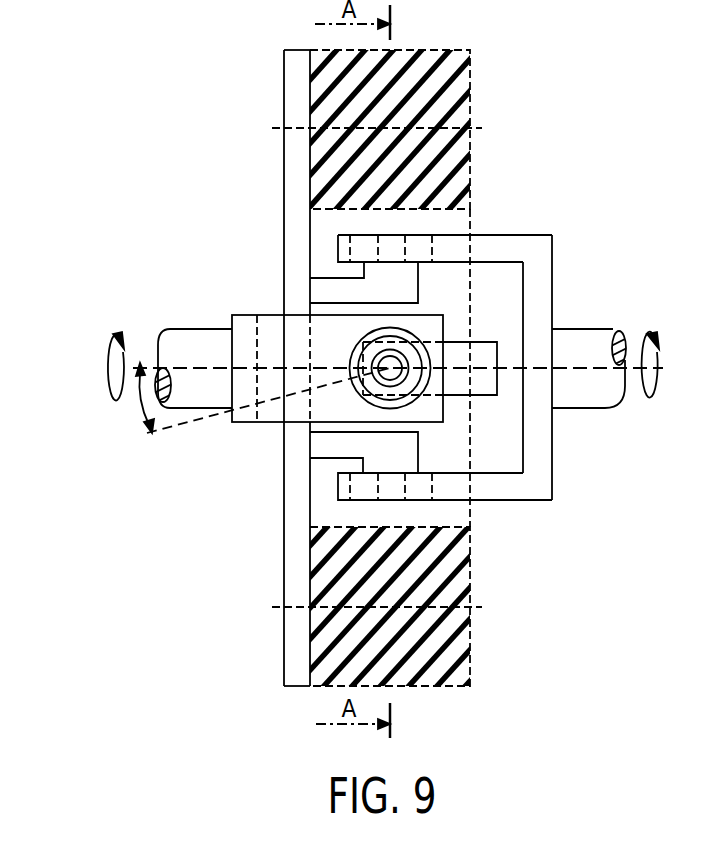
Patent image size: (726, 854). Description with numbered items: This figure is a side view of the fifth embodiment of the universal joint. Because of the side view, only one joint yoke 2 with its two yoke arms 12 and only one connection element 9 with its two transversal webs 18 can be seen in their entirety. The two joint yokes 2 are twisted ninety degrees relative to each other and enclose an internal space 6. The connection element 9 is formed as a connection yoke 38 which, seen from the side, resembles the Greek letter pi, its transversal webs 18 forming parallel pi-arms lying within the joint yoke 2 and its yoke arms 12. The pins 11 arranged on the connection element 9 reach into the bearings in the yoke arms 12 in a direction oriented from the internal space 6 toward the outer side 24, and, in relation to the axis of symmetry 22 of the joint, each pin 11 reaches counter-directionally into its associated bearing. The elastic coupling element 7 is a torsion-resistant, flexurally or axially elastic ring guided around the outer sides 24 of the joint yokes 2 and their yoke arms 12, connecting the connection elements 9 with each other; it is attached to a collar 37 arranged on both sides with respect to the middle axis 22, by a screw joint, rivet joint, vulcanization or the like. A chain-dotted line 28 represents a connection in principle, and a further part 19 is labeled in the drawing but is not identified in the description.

The joint yoke 2 is at (543, 445).
The internal space 6 is at (498, 452).
The elastic coupling element 7 is at (463, 648).
The connection element 9 is at (293, 223).
The connection yoke 38 is at (377, 327).
The pin 11 is at (393, 248).
The yoke arm 12 is at (507, 487).
The transversal web 18 is at (332, 442).
The lower step 19 is at (392, 455).
The axis of symmetry 22 is at (588, 366).
The outer side 24 is at (477, 502).
The chain-dotted line 28 is at (275, 600).
The collar 37 is at (300, 172).